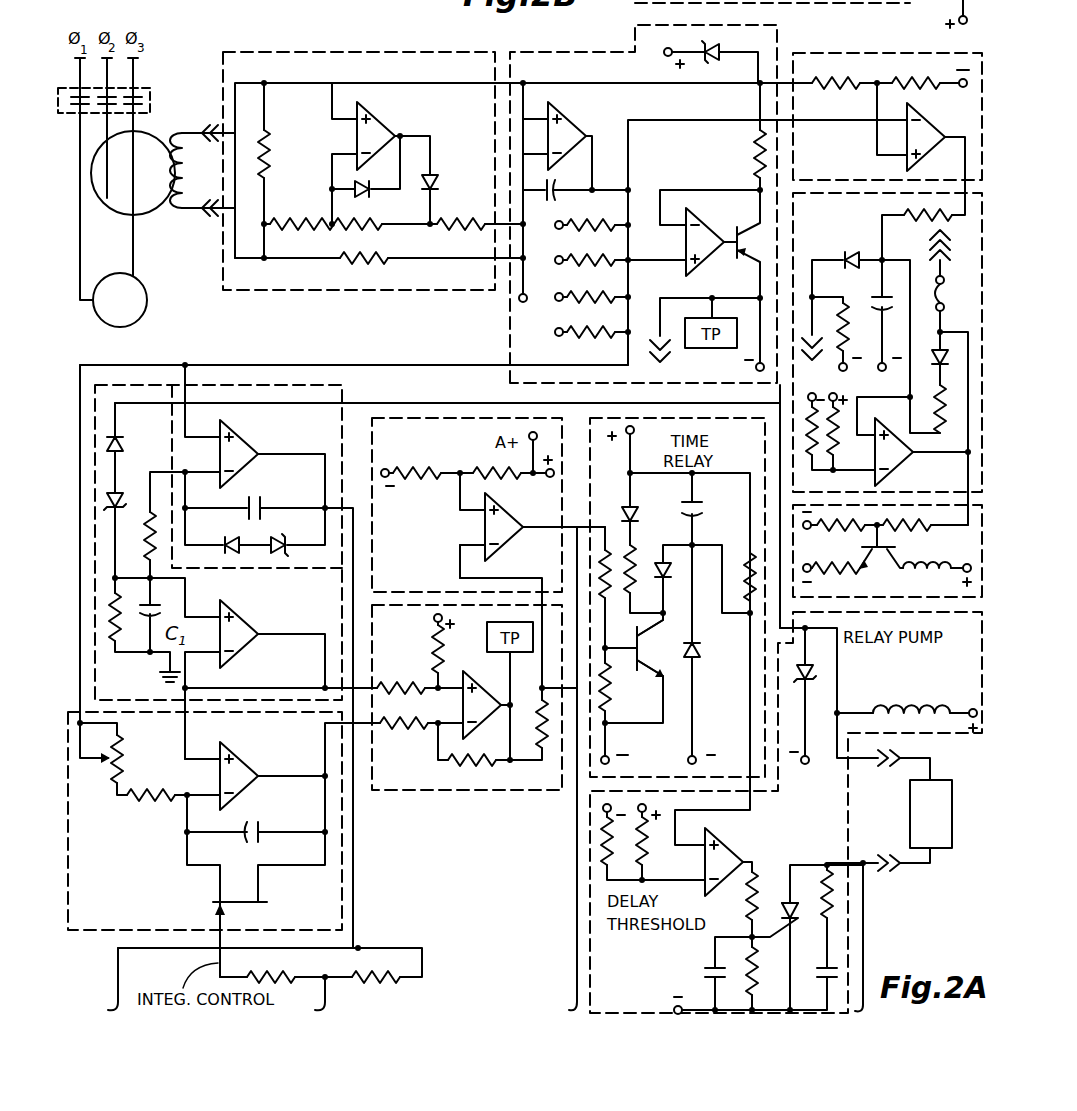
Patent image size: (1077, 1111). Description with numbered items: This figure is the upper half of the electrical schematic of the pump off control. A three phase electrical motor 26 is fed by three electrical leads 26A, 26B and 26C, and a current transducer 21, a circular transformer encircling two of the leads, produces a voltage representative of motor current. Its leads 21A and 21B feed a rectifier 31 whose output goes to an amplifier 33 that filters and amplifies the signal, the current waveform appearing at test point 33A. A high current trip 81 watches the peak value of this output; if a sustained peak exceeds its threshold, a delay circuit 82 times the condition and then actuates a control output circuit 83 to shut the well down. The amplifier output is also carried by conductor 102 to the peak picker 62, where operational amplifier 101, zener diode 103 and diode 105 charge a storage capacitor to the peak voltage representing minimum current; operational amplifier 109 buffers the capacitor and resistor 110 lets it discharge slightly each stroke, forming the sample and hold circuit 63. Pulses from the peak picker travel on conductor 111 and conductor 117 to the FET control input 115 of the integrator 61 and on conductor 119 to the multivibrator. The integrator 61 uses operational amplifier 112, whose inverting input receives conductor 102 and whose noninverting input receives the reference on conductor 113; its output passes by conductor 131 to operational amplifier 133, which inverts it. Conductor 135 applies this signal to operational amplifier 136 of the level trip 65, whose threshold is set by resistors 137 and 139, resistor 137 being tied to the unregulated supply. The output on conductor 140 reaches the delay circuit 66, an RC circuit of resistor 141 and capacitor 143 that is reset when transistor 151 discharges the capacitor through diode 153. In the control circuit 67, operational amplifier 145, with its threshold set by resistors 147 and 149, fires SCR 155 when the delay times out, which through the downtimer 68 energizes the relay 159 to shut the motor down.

The electrical lead 26C is at (82, 68).
The electrical lead 26A is at (143, 65).
The electrical lead 26B is at (112, 86).
The current transducer 21 is at (143, 217).
The transducer lead 21A is at (200, 131).
The transducer lead 21B is at (187, 212).
The electrical motor 26 is at (148, 319).
The rectifier 31 is at (345, 52).
The amplifier 33 is at (575, 52).
The test point 33A is at (657, 338).
The delay circuit 66 is at (680, 402).
The high current trip 81 is at (877, 53).
The delay circuit 82 is at (868, 193).
The control output circuit 83 is at (885, 505).
The control circuit 67 is at (590, 925).
The relay 159 is at (910, 705).
The downtimer 68 is at (910, 815).
The conductor 102 is at (135, 365).
The peak picker 62 is at (265, 385).
The sample and hold circuit 63 is at (138, 700).
The resistor 110 is at (110, 645).
The operational amplifier 101 is at (248, 437).
The operational amplifier 109 is at (248, 652).
The diode 105 is at (232, 557).
The zener diode 103 is at (278, 537).
The conductor 111 is at (358, 909).
The conductor 113 is at (187, 733).
The operational amplifier 112 is at (248, 780).
The control input 115 is at (215, 910).
The conductor 117 is at (424, 965).
The conductor 119 is at (116, 989).
The level trip 65 is at (475, 418).
The integrator 61 is at (383, 793).
The conductor 135 is at (460, 560).
The resistor 139 is at (428, 480).
The resistor 137 is at (505, 479).
The operational amplifier 136 is at (503, 548).
The conductor 140 is at (583, 523).
The operational amplifier 133 is at (480, 680).
The conductor 131 is at (358, 725).
The resistor 141 is at (737, 594).
The diode 153 is at (662, 563).
The capacitor 143 is at (700, 500).
The transistor 151 is at (635, 659).
The resistor 147 is at (605, 849).
The resistor 149 is at (645, 838).
The operational amplifier 145 is at (730, 856).
The SCR 155 is at (790, 903).